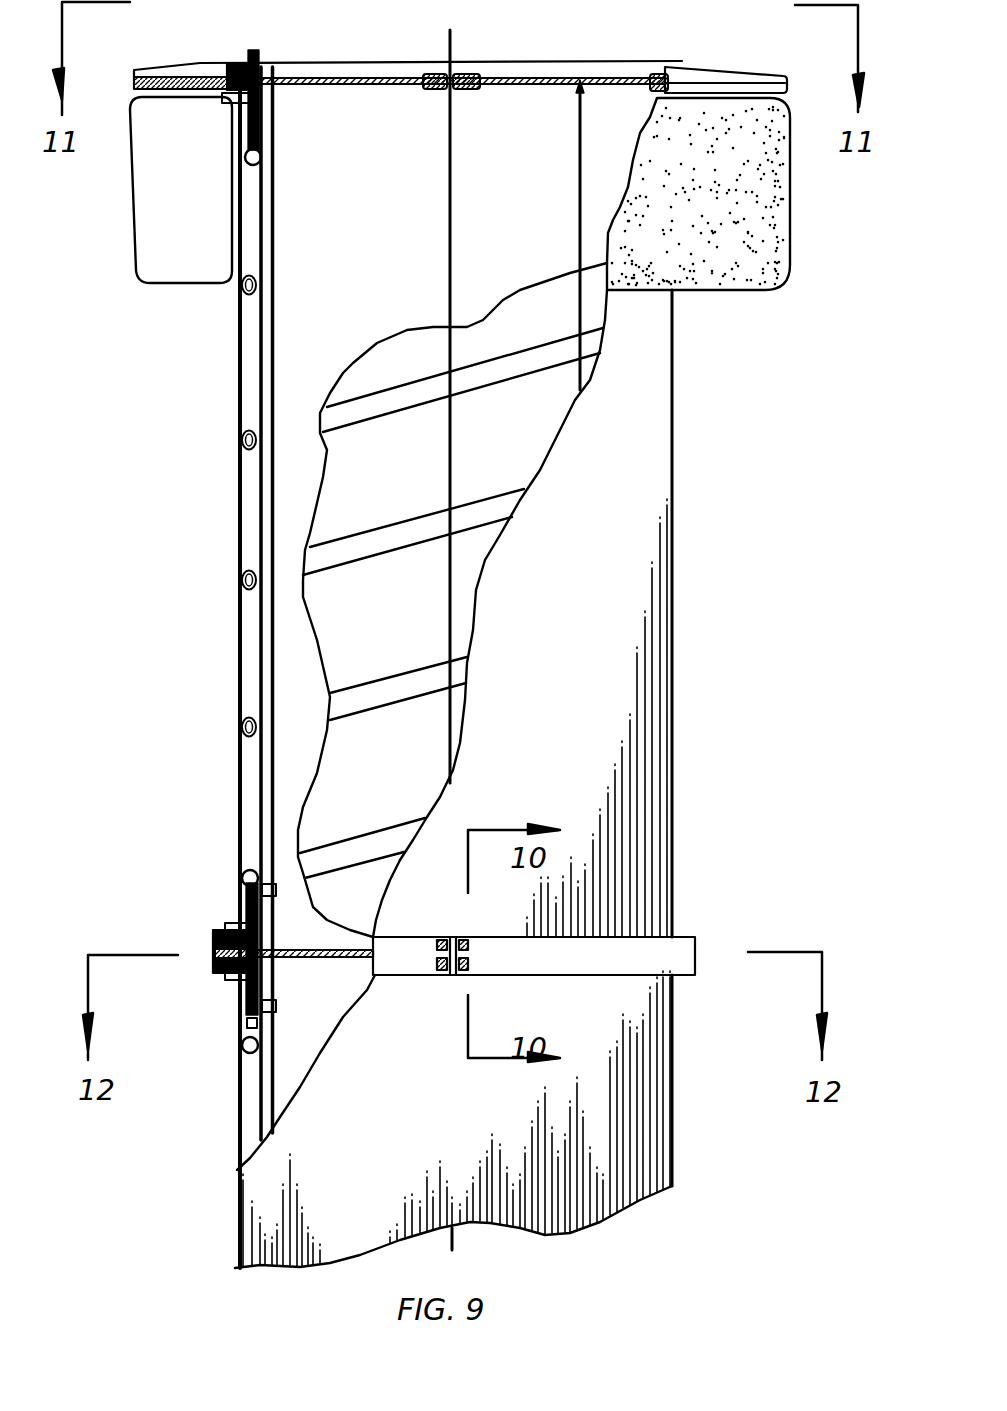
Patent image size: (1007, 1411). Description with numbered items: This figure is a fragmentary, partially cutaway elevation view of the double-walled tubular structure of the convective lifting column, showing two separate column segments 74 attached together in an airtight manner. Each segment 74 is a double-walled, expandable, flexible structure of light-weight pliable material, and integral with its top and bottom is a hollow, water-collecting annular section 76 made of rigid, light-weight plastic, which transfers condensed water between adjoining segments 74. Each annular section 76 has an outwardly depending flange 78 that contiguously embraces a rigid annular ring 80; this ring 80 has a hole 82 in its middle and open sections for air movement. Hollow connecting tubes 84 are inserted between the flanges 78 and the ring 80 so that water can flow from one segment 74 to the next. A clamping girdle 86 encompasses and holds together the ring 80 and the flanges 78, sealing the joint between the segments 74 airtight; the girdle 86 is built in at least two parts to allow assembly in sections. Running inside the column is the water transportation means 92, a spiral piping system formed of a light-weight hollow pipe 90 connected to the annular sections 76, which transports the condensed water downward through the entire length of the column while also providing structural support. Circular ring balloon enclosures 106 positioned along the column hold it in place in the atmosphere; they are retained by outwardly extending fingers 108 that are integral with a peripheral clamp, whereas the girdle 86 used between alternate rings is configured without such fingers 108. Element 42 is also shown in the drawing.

The cable 42 is at (450, 428).
The column segment 74 is at (676, 632).
The annular section 76 is at (278, 116).
The flange 78 is at (227, 97).
The annular ring 80 is at (666, 77).
The hole 82 is at (470, 78).
The connecting tube 84 is at (260, 52).
The clamping girdle 86 is at (231, 62).
The hollow pipe 90 is at (241, 578).
The water transportation means 92 is at (240, 315).
The ring balloon enclosure 106 is at (163, 287).
The finger 108 is at (694, 65).